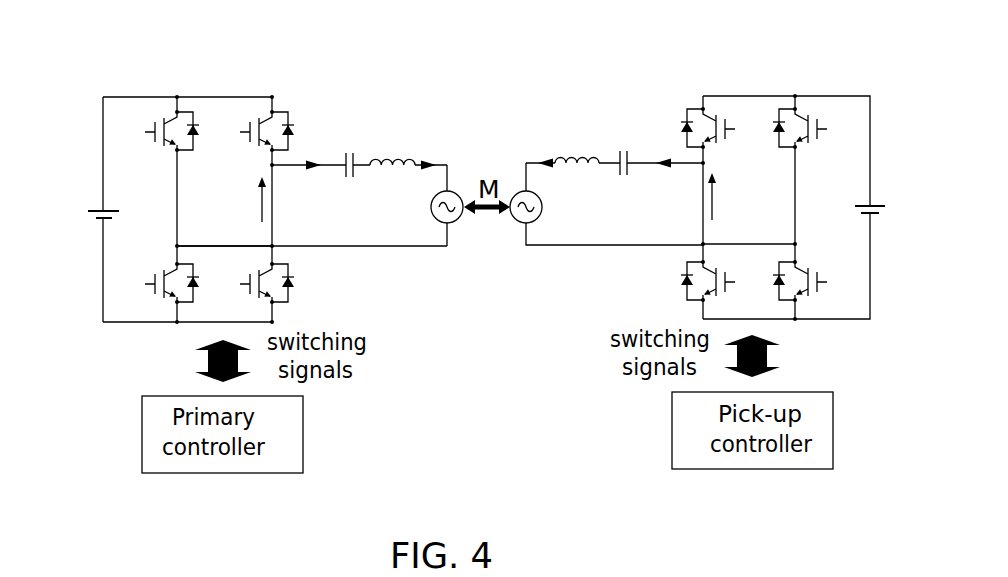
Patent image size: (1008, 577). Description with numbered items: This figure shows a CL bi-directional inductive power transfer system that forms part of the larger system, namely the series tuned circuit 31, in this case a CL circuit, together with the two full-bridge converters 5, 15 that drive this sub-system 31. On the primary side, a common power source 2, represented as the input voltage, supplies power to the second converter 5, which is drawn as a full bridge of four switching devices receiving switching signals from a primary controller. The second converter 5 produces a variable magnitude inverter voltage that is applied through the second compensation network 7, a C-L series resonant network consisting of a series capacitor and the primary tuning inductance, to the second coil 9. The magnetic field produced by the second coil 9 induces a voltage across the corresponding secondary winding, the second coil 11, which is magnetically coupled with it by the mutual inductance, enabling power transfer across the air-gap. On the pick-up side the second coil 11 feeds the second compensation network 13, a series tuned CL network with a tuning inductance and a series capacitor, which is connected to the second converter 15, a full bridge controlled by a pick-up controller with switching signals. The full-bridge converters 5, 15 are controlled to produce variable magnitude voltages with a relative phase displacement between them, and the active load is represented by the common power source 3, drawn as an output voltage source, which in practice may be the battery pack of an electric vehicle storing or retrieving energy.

The common power source 2 is at (82, 196).
The common power source 3 is at (886, 194).
The second converter 5 is at (219, 122).
The second compensation network 7 is at (370, 117).
The second coil 9 is at (460, 177).
The second coil 11 is at (515, 230).
The second compensation network 13 is at (621, 122).
The second converter 15 is at (732, 122).
The series tuned circuit 31 is at (803, 76).